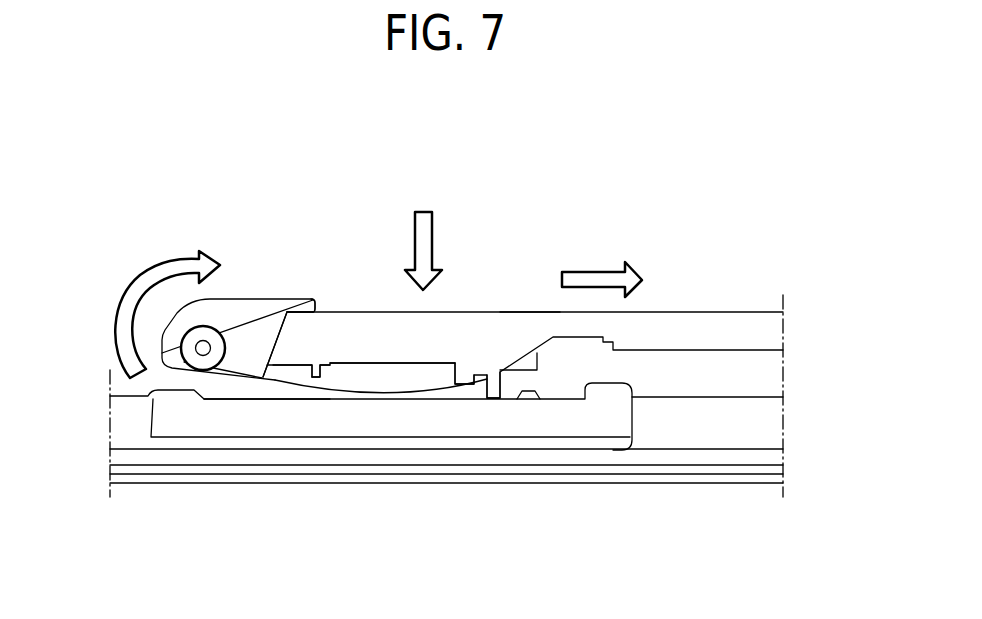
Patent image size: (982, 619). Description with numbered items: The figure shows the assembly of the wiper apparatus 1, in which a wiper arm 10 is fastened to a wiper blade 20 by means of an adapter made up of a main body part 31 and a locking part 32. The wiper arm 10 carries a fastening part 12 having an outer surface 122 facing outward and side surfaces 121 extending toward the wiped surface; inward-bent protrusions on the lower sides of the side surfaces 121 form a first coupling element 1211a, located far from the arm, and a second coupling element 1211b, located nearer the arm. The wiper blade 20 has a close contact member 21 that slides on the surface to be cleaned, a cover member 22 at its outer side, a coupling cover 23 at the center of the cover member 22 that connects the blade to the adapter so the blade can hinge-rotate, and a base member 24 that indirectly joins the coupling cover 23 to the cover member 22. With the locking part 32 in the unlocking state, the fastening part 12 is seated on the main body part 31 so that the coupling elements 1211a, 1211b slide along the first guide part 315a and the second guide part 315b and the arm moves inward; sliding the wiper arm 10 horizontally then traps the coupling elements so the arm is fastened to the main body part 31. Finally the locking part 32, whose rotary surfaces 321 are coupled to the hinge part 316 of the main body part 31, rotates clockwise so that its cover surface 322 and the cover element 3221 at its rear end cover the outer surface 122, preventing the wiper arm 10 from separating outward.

The wiper apparatus 1 is at (811, 160).
The wiper arm 10 is at (748, 284).
The fastening part 12 is at (700, 322).
The side surface 121 is at (466, 325).
The outer surface 122 is at (513, 312).
The wiper blade 20 is at (656, 497).
The close contact member 21 is at (722, 468).
The cover member 22 is at (764, 398).
The coupling cover 23 is at (287, 398).
The base member 24 is at (566, 425).
The main body part 31 is at (394, 382).
The first guide part 315a is at (290, 383).
The second guide part 315b is at (466, 380).
The first coupling element 1211a is at (312, 373).
The second coupling element 1211b is at (483, 382).
The locking part 32 is at (174, 318).
The rotary surface 321 is at (223, 310).
The cover surface 322 is at (268, 300).
The cover element 3221 is at (301, 308).
The hinge part 316 is at (186, 362).